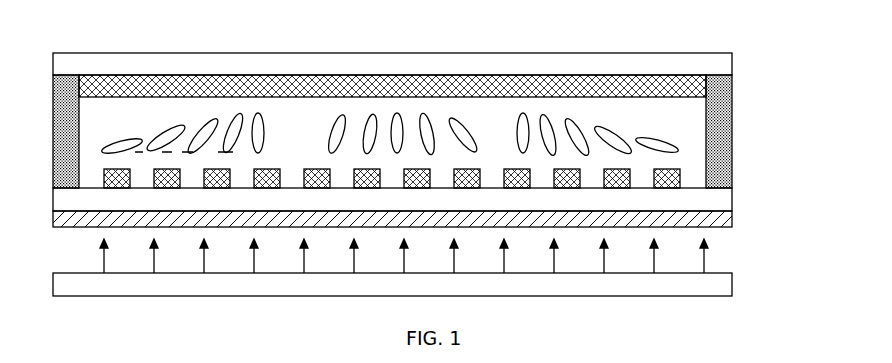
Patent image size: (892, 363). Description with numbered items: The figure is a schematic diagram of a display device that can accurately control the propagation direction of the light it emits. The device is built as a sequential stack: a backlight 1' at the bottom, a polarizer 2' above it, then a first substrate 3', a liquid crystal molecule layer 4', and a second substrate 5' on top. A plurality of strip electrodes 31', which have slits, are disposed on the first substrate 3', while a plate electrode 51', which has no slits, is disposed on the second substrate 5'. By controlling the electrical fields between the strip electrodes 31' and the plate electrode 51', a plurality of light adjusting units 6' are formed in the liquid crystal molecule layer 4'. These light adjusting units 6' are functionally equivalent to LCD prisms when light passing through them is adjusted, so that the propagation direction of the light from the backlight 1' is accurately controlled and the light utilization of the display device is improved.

The backlight 1' is at (427, 267).
The polarizer 2' is at (427, 219).
The first substrate 3' is at (427, 199).
The strip electrodes 31' is at (457, 177).
The liquid crystal molecule layer 4' is at (450, 84).
The second substrate 5' is at (427, 64).
The plate electrode 51' is at (445, 86).
The light adjusting units 6' is at (240, 83).